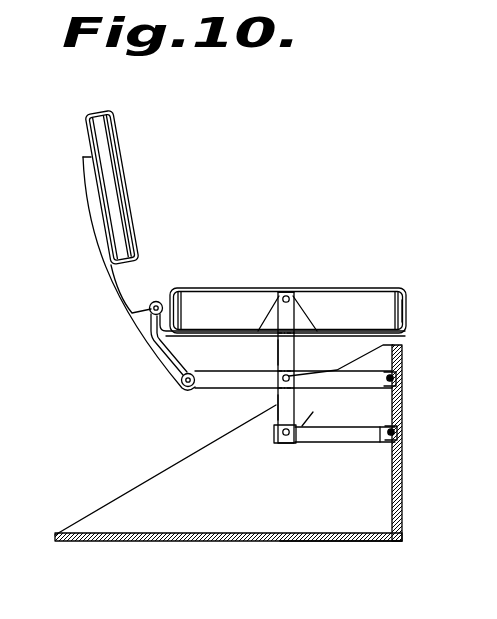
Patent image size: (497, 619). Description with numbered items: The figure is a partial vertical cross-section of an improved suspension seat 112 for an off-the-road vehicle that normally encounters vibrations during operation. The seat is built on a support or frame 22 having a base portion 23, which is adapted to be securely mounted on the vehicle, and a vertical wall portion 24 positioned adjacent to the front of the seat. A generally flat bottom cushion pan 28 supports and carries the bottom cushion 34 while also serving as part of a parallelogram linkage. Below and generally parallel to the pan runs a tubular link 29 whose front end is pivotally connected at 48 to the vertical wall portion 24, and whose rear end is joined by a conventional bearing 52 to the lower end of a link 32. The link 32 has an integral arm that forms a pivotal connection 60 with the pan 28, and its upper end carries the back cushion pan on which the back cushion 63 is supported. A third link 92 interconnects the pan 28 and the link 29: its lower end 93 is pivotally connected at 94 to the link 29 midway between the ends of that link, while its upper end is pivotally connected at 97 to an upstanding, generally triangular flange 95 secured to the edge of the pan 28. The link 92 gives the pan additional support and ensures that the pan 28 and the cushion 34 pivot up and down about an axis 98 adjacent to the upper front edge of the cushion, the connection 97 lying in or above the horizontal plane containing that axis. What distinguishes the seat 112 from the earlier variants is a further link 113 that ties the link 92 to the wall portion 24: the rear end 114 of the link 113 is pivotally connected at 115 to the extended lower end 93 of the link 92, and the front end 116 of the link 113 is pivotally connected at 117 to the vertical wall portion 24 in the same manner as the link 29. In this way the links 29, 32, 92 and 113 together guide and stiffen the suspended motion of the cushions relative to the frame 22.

The suspension seat 112 is at (246, 228).
The back cushion 63 is at (120, 142).
The link 32 is at (90, 198).
The pivotal connection 60 is at (160, 301).
The bottom cushion 34 is at (245, 272).
The pivotal connection 97 is at (288, 288).
The flange 95 is at (316, 289).
The axis 98 is at (396, 290).
The bottom cushion pan 28 is at (203, 329).
The link 29 is at (216, 367).
The link 92 is at (280, 349).
The pivotal connection 94 is at (290, 378).
The lower end 93 is at (280, 391).
The bearing 52 is at (185, 388).
The pivotal connection 48 is at (398, 380).
The rear end 114 is at (328, 413).
The strut 116 is at (382, 428).
The pivotal connection 117 is at (400, 432).
The pivotal connection 115 is at (283, 444).
The link 113 is at (342, 442).
The vertical wall portion 24 is at (403, 472).
The support or frame 22 is at (210, 543).
The base portion 23 is at (294, 545).